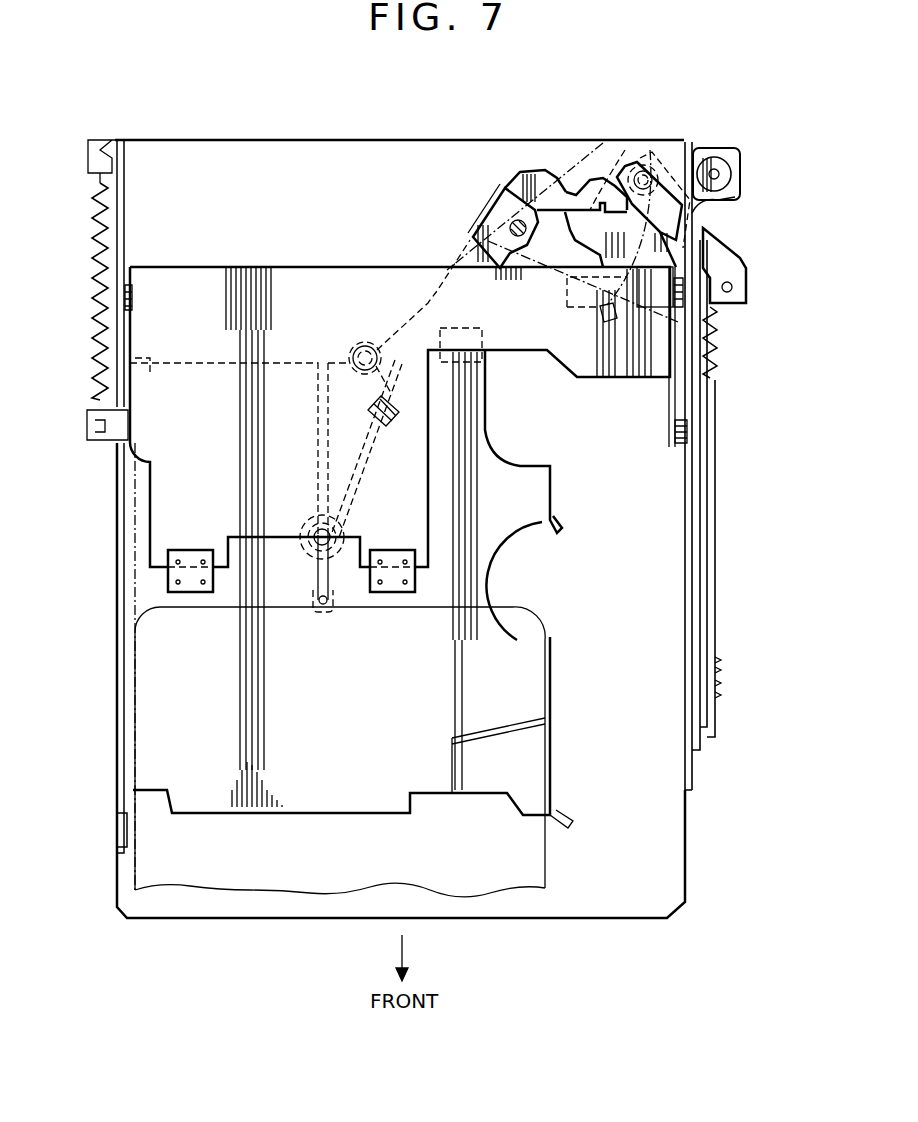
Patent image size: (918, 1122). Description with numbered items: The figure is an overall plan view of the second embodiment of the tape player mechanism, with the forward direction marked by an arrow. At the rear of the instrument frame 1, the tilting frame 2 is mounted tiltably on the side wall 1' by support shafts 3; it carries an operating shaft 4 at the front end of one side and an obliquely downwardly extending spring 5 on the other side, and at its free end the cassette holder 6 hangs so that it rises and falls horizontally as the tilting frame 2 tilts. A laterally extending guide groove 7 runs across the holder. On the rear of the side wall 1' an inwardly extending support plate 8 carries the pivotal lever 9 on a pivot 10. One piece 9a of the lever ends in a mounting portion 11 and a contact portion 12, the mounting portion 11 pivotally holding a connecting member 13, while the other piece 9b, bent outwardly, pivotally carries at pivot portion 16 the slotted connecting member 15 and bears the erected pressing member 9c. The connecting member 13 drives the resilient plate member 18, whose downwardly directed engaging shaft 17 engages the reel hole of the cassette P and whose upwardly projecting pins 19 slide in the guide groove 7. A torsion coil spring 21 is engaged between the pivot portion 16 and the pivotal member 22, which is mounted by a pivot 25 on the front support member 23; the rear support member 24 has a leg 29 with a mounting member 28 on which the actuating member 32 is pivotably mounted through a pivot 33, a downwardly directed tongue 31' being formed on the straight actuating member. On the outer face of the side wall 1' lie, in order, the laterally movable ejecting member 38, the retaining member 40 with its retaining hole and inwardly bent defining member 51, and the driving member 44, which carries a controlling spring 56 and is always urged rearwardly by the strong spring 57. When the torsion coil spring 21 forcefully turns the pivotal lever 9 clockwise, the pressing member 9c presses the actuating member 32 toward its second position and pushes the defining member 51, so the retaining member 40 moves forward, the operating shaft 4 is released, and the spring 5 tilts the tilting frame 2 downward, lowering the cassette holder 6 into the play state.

The instrument frame 1 is at (386, 497).
The side wall 1' is at (725, 466).
The tilting frame 2 is at (290, 282).
The support shaft 3 is at (130, 300).
The operating shaft 4 is at (684, 447).
The spring 5 is at (92, 395).
The cassette holder 6 is at (487, 558).
The guide groove 7 is at (320, 433).
The support plate 8 is at (616, 178).
The pivotal lever 9 is at (466, 247).
The one piece 9a is at (405, 318).
The other piece 9b is at (522, 174).
The pressing member 9c is at (585, 195).
The pivot 10 is at (513, 222).
The mounting portion 11 is at (360, 348).
The contact portion 12 is at (398, 413).
The connecting member 13 is at (365, 458).
The connecting member 15 is at (655, 287).
The pivot portion 16 is at (652, 176).
The engaging shaft 17 is at (330, 608).
The member 18 is at (305, 578).
The pin 19 is at (314, 527).
The torsion coil spring 21 is at (735, 200).
The pivotal member 22 is at (716, 150).
The support member 23 is at (737, 165).
The support member 24 is at (735, 248).
The pivot 25 is at (720, 170).
The mounting member 28 is at (740, 278).
The leg 29 is at (606, 320).
The tongue 31' is at (640, 176).
The actuating member 32 is at (578, 252).
The pivot 33 is at (733, 290).
The ejecting member 38 is at (697, 592).
The retaining member 40 is at (704, 560).
The driving member 44 is at (716, 500).
The defining member 51 is at (567, 302).
The controlling spring 56 is at (720, 680).
The strong spring 57 is at (717, 350).
The cassette P is at (548, 873).